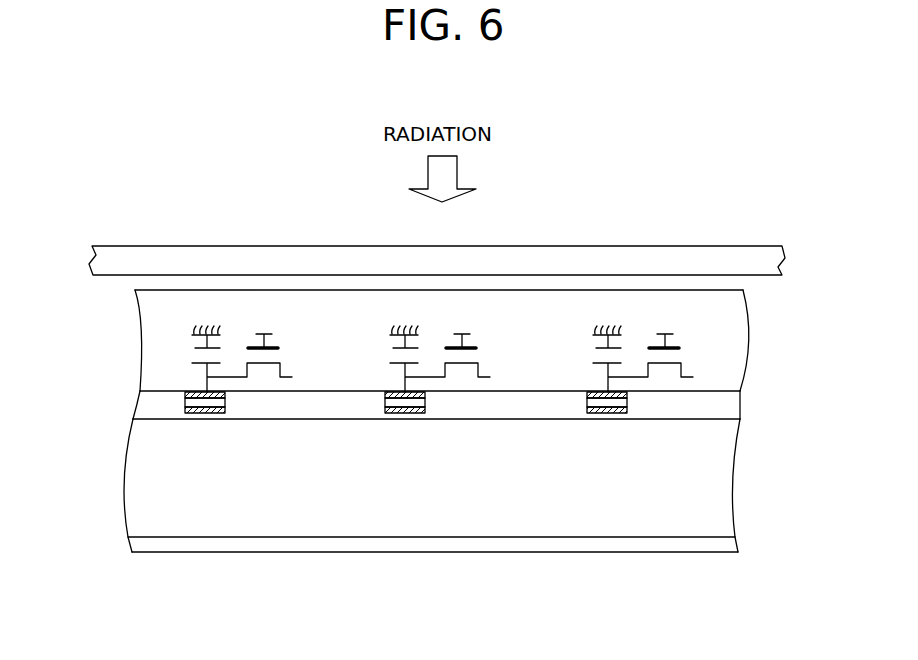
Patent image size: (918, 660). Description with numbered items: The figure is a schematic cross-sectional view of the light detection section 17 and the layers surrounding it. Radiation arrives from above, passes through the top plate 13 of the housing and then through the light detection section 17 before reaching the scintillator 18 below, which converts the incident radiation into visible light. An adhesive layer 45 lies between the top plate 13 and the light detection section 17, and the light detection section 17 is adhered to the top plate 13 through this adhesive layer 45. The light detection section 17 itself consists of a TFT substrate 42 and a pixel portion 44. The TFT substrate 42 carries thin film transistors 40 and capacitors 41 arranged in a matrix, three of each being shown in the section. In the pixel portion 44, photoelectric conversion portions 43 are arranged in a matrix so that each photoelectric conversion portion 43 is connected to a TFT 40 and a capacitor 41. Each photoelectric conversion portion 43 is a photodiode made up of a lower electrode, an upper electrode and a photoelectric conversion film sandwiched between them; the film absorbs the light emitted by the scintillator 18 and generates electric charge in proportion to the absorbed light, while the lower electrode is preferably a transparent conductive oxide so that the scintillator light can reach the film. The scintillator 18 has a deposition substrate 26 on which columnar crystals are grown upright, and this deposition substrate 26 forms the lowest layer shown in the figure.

The top plate 13 is at (756, 258).
The adhesive layer 45 is at (548, 289).
The TFT substrate 42 is at (143, 319).
The light detection section 17 is at (758, 292).
The capacitor 41 is at (195, 348).
The thin film transistor 40 is at (273, 343).
The pixel portion 44 is at (141, 407).
The photoelectric conversion portion 43 is at (456, 460).
The scintillator 18 is at (142, 477).
The deposition substrate 26 is at (374, 552).